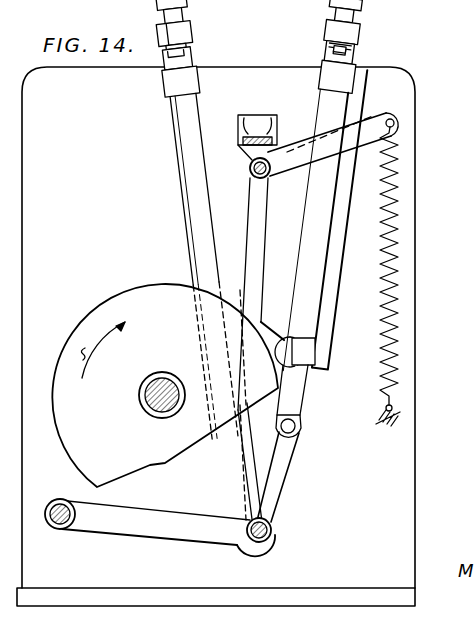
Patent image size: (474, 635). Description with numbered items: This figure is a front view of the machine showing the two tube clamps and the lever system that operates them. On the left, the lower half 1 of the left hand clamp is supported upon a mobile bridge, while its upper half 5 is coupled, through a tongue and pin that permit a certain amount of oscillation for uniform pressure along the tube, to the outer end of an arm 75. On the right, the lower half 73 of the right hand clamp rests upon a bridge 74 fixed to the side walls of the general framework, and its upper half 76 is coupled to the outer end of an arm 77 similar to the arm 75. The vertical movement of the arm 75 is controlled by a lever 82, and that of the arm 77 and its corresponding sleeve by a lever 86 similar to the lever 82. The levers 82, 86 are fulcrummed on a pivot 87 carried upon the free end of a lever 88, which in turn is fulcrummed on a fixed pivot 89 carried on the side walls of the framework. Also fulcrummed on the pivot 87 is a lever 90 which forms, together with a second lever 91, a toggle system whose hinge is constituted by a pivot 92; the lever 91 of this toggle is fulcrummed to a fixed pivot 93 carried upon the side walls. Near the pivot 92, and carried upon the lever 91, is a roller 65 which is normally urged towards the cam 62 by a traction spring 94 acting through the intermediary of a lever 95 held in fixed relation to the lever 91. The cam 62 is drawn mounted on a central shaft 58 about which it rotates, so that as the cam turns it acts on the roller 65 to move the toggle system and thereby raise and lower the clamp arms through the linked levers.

The lower half of the clamp 1 is at (190, 61).
The upper half of the clamp 5 is at (196, 47).
The shaft 58 is at (158, 385).
The cam 62 is at (108, 308).
The roller 65 is at (291, 340).
The lower half of the right hand clamp 73 is at (349, 60).
The bridge 74 is at (332, 72).
The arm 75 is at (195, 34).
The upper half of the other clamp 76 is at (333, 50).
The arm 77 is at (352, 38).
The lever 82 is at (238, 478).
The lever 86 is at (276, 485).
The pivot 87 is at (271, 540).
The lever 88 is at (184, 533).
The fixed pivot 89 is at (61, 529).
The lever 90 is at (254, 438).
The lever 91 is at (254, 264).
The pivot 92 is at (284, 380).
The fixed pivot 93 is at (250, 176).
The traction spring 94 is at (399, 182).
The lever 95 is at (358, 132).